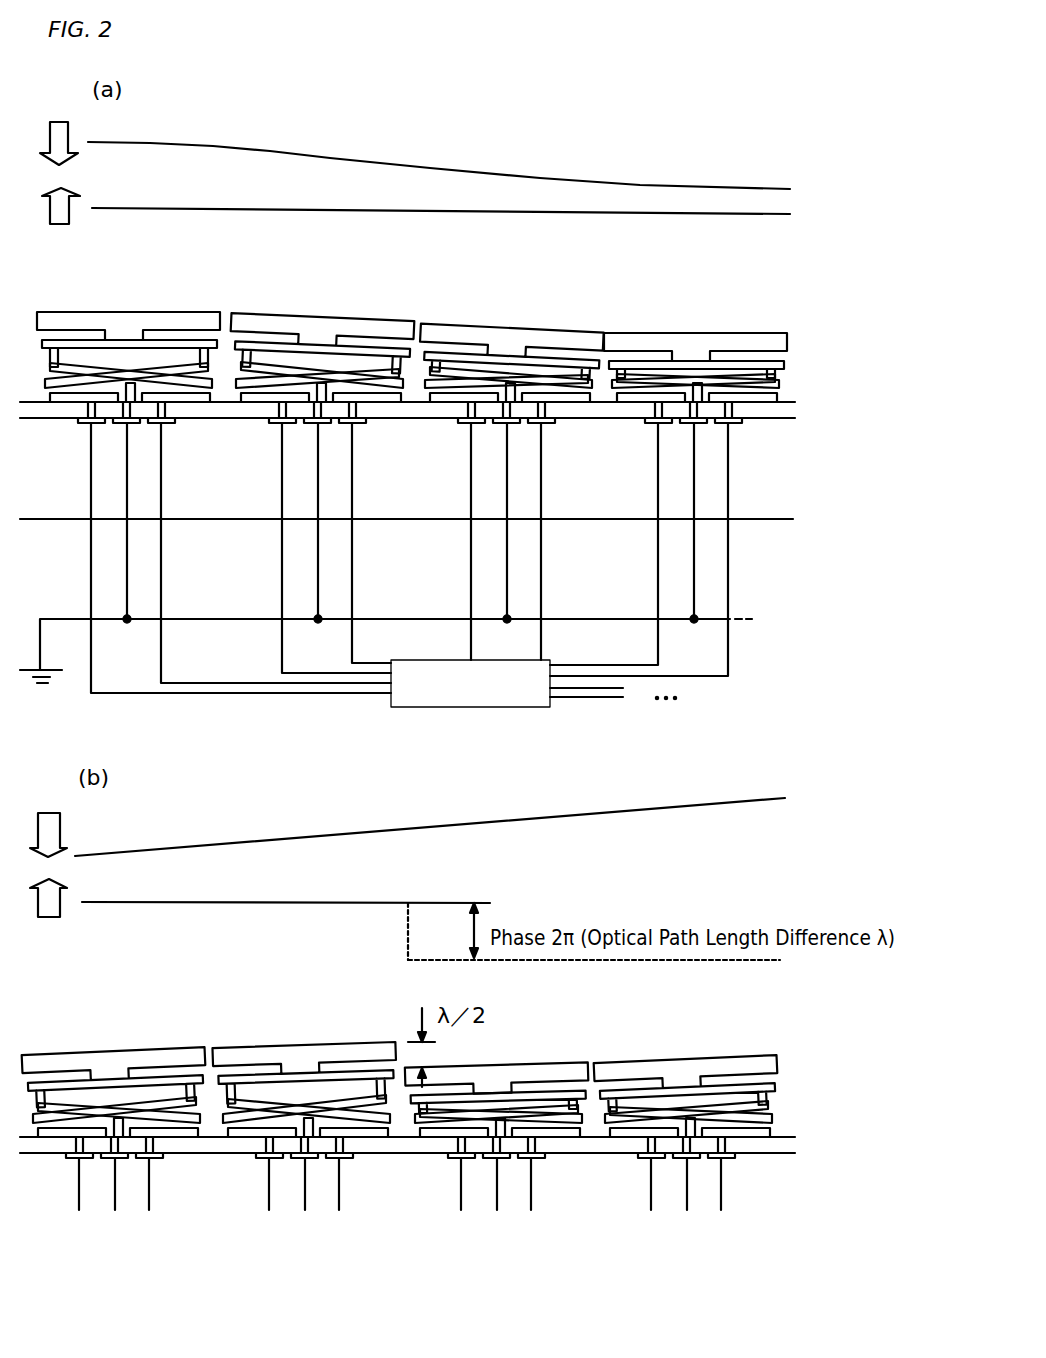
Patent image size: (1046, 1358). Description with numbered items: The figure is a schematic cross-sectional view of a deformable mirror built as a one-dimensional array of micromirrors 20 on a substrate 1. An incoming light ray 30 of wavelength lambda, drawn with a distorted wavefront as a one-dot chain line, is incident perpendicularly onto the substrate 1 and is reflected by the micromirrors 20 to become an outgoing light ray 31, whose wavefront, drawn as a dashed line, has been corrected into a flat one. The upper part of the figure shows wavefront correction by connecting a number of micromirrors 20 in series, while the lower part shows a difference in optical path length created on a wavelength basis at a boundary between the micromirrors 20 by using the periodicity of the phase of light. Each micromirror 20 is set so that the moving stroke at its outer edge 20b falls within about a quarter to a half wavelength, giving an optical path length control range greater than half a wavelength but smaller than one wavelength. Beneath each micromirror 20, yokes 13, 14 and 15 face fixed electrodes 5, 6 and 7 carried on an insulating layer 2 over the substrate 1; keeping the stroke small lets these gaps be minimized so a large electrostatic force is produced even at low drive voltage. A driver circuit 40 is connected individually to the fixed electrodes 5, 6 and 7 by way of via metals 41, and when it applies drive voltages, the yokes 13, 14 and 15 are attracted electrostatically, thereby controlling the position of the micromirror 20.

The substrate 1 is at (744, 498).
The insulating layer 2 is at (770, 412).
The fixed electrode 5 is at (152, 477).
The fixed electrode 6 is at (152, 477).
The fixed electrode 7 is at (156, 402).
The yoke 13 is at (147, 485).
The yoke 14 is at (147, 485).
The yoke 15 is at (140, 385).
The micromirror 20 is at (221, 700).
The outer edge 20b is at (183, 313).
The incoming light ray 30 is at (213, 145).
The outgoing light ray 31 is at (277, 208).
The driver circuit 40 is at (534, 683).
The via metals 41 is at (362, 422).